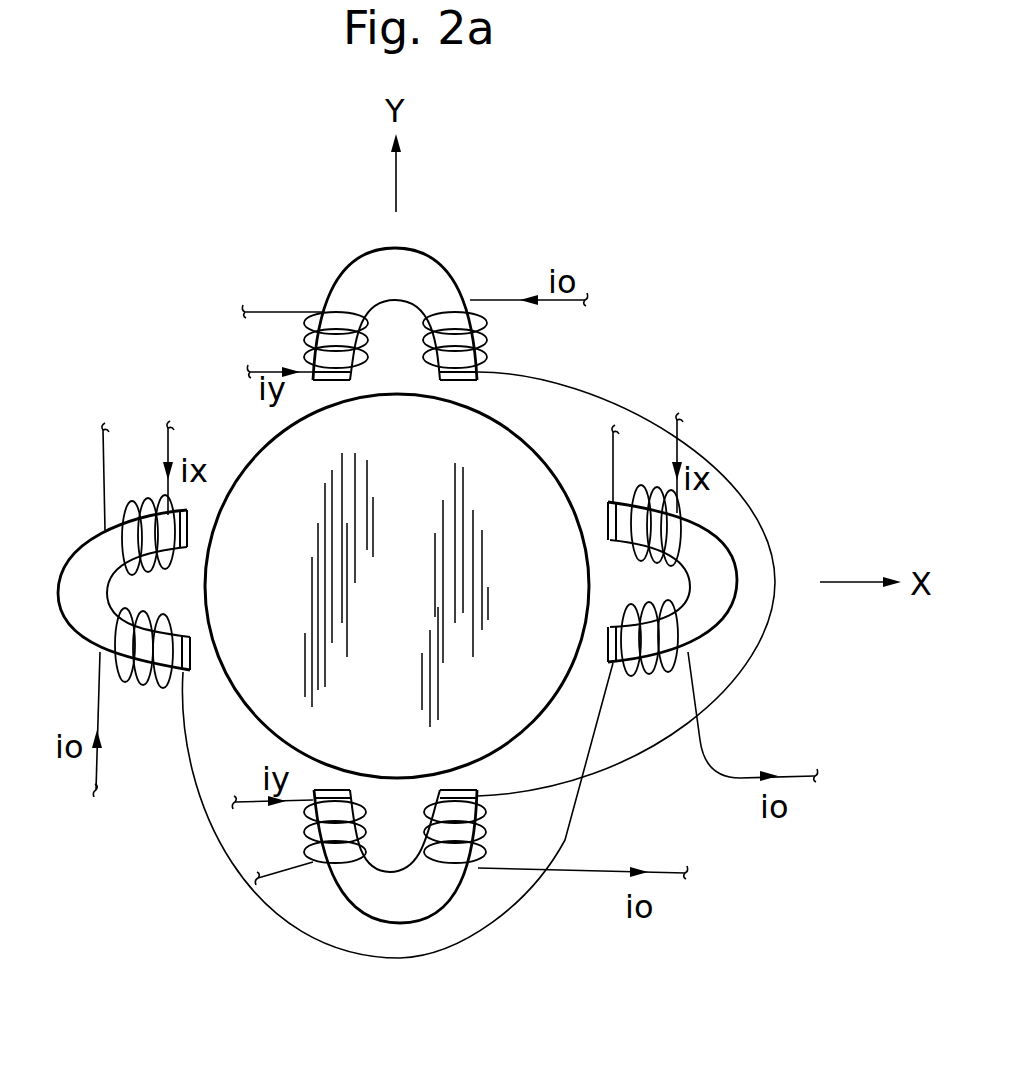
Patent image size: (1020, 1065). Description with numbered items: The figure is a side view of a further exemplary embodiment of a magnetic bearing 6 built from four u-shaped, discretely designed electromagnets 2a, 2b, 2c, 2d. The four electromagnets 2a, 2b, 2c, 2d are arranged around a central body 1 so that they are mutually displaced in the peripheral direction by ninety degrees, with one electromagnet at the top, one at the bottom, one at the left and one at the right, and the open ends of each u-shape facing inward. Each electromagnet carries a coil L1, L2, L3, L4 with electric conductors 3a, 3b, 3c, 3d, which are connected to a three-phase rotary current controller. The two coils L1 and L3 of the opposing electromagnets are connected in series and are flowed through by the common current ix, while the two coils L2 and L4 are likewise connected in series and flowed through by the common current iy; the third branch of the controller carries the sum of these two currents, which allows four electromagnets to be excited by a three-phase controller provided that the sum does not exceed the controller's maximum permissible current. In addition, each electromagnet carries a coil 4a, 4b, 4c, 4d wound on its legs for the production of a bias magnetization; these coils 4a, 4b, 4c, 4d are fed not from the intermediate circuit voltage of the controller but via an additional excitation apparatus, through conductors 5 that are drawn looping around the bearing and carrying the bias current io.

The rotor / shaft 1 is at (505, 470).
The electromagnet 2a is at (720, 575).
The electromagnet 2b is at (435, 890).
The electromagnet 2c is at (73, 605).
The electromagnet 2d is at (402, 262).
The electric conductor 3a is at (679, 432).
The electric conductor 3b is at (270, 310).
The electric conductor 3c is at (171, 442).
The electric conductor 3d is at (240, 790).
The coil 4a is at (650, 642).
The coil 4b is at (470, 838).
The coil 4c is at (137, 655).
The coil 4d is at (462, 338).
The bias current conductor 5 is at (745, 497).
The magnetic bearing 6 is at (712, 226).
The coil L1 is at (651, 465).
The coil L2 is at (268, 338).
The coil L3 is at (137, 448).
The coil L4 is at (270, 836).